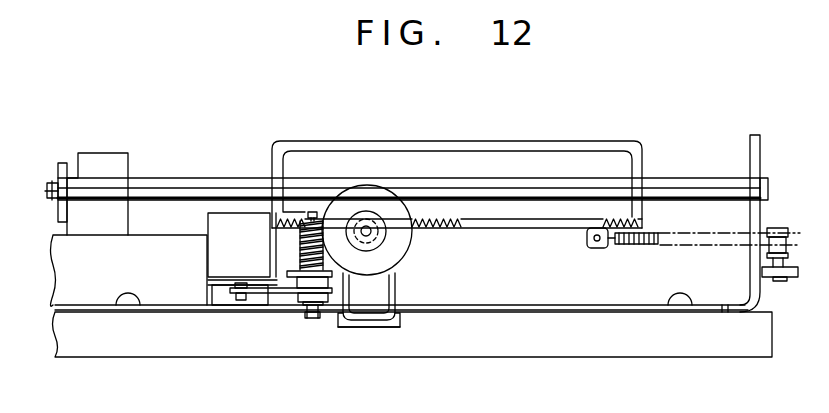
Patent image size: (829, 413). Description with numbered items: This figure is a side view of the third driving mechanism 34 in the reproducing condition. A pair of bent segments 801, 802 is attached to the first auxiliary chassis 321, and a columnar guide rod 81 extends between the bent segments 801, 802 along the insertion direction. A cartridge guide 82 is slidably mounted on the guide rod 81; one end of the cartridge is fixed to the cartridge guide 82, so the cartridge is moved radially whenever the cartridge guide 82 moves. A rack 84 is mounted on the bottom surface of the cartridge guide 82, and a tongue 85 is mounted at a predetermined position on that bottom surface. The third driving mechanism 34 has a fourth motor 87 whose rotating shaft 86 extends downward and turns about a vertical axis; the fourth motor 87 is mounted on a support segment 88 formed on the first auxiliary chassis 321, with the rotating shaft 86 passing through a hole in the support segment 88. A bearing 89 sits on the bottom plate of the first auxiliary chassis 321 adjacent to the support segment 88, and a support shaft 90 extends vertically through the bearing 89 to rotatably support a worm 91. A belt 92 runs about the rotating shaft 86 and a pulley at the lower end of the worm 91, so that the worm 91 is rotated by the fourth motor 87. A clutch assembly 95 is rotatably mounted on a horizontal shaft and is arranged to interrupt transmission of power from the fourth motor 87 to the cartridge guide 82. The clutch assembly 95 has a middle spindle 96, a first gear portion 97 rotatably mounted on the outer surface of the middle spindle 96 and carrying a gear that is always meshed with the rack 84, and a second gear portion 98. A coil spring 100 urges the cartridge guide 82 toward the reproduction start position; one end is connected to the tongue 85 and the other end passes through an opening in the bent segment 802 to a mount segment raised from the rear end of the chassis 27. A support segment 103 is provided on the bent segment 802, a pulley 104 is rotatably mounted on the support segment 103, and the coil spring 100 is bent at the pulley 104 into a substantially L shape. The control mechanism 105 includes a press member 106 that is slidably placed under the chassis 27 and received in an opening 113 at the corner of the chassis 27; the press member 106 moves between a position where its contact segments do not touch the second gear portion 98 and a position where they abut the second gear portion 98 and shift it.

The chassis 27 is at (642, 345).
The third driving mechanism 34 is at (270, 318).
The first auxiliary chassis 321 is at (140, 247).
The bent segment 801 is at (56, 204).
The guide rod 81 is at (684, 188).
The bent segment 802 is at (755, 135).
The cartridge guide 82 is at (575, 145).
The rack 84 is at (463, 226).
The clutch assembly 95 is at (417, 232).
The second gear portion 98 is at (384, 190).
The middle spindle 96 is at (365, 210).
The first gear portion 97 is at (378, 238).
The support shaft 90 is at (312, 212).
The worm 91 is at (302, 238).
The bearing 89 is at (313, 318).
The belt 92 is at (287, 293).
The support segment 88 is at (213, 288).
The fourth motor 87 is at (210, 258).
The rotating shaft 86 is at (243, 309).
The press member 106 is at (395, 293).
The opening 113 is at (357, 322).
The control mechanism 105 is at (375, 330).
The tongue 85 is at (587, 232).
The coil spring 100 is at (643, 247).
The pulley 104 is at (765, 254).
The support segment 103 is at (760, 277).